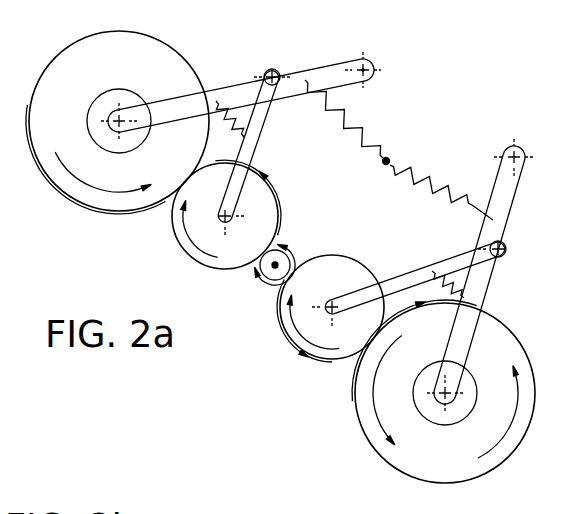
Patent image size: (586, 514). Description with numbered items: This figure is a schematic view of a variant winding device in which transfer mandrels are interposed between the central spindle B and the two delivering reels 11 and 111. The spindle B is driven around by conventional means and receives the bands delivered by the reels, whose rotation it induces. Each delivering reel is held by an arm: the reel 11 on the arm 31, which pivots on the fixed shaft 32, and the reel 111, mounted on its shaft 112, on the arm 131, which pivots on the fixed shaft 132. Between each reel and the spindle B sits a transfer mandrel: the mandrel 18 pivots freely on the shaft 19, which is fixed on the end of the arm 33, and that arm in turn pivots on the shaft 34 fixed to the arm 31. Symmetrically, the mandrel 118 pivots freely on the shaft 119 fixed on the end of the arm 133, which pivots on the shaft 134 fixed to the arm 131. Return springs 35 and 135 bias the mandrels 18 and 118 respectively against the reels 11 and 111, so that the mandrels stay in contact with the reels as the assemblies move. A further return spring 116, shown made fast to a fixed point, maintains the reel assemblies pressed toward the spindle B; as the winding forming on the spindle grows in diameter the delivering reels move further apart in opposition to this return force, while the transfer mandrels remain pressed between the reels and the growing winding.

The delivering reel 11 is at (169, 65).
The transfer mandrel 18 is at (190, 252).
The shaft 19 is at (221, 226).
The arm 31 is at (232, 95).
The fixed shaft 32 is at (365, 64).
The arm 33 is at (248, 158).
The shaft 34 is at (281, 82).
The spring 35 is at (240, 117).
The spring 116 is at (437, 181).
The spindle B is at (275, 280).
The transfer mandrel 118 is at (332, 268).
The shaft 119 is at (339, 298).
The arm 131 is at (502, 199).
The fixed shaft 132 is at (517, 150).
The arm 133 is at (415, 272).
The shaft 134 is at (501, 251).
The spring 135 is at (462, 288).
The delivering reel 111 is at (496, 350).
The shaft 112 is at (447, 396).